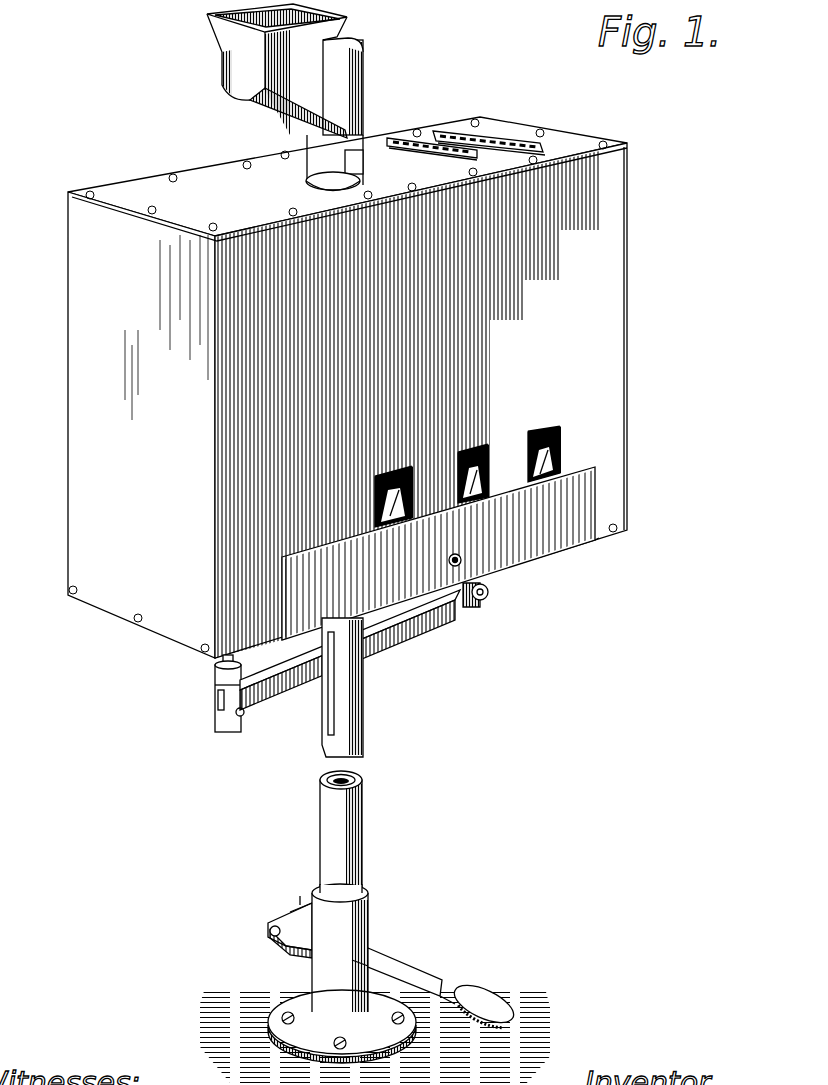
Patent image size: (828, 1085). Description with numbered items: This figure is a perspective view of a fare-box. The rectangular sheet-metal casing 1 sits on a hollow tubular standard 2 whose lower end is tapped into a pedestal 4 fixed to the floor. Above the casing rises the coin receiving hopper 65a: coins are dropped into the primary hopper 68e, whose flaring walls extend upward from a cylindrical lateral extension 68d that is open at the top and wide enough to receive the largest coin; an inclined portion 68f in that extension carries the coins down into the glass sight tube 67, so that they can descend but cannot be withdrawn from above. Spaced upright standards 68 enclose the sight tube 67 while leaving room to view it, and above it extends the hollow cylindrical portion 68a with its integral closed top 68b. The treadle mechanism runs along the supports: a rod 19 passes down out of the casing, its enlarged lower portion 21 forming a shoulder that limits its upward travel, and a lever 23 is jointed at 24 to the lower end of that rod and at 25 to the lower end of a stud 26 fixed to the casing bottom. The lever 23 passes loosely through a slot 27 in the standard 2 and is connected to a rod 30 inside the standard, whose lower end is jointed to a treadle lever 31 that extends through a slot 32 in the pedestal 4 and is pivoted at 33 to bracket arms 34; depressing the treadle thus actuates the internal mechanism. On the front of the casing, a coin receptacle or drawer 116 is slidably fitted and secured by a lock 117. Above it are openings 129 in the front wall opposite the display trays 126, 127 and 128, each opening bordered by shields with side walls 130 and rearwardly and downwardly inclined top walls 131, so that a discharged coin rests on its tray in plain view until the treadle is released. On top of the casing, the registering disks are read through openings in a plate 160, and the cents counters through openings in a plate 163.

The casing 1 is at (68, 326).
The standard 2 is at (342, 755).
The pedestal 4 is at (369, 926).
The rod 19 is at (222, 660).
The enlarged lower portion of rod 21 is at (217, 680).
The lever 23 is at (387, 640).
The joint 24 is at (245, 709).
The joint 25 is at (489, 592).
The stud 26 is at (470, 607).
The slot 27 is at (330, 708).
The rod 30 is at (347, 777).
The treadle lever 31 is at (292, 913).
The slot 32 is at (366, 972).
The pivot 33 is at (272, 936).
The bracket arms 34 is at (300, 903).
The coin receiving hopper 65a is at (287, 92).
The glass tube 67 is at (363, 162).
The upright standards 68 is at (320, 168).
The hollow cylindrical portion 68a is at (363, 67).
The closed top 68b is at (349, 37).
The lateral extension 68d is at (232, 80).
The primary hopper 68e is at (222, 36).
The inclined portion 68f is at (275, 115).
The coin receptacle 116 is at (440, 553).
The lock 117 is at (461, 558).
The tray 126 is at (377, 495).
The tray 127 is at (528, 461).
The tray 128 is at (460, 482).
The openings 129 is at (393, 469).
The shield side walls 130 is at (403, 497).
The shield top walls 131 is at (382, 470).
The plate 160 is at (497, 138).
The plate 163 is at (397, 140).